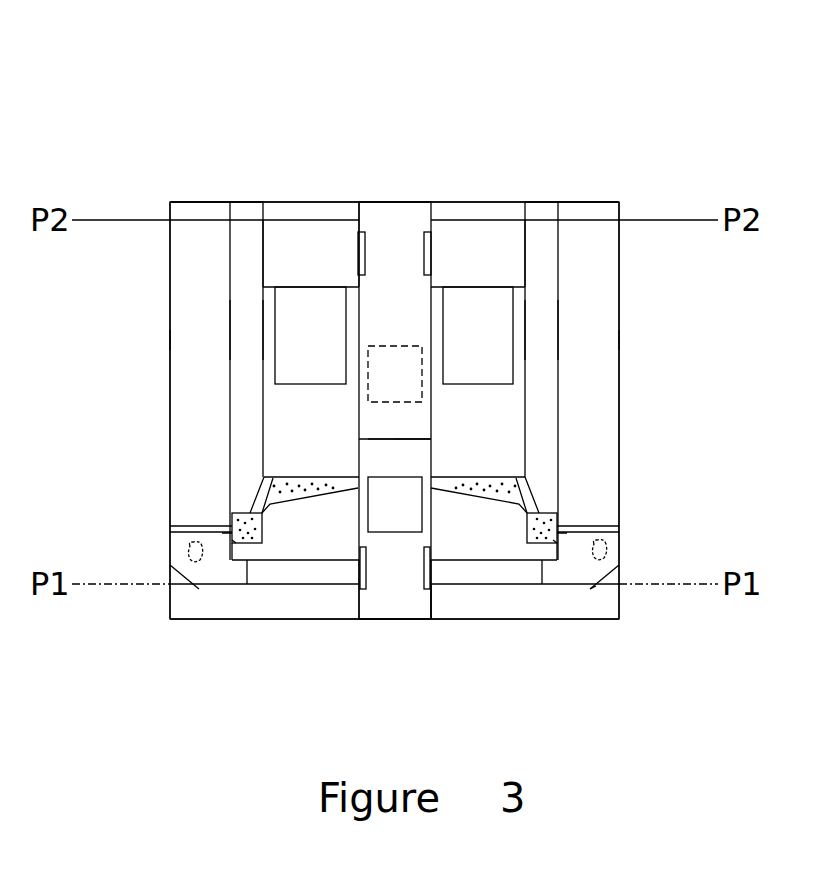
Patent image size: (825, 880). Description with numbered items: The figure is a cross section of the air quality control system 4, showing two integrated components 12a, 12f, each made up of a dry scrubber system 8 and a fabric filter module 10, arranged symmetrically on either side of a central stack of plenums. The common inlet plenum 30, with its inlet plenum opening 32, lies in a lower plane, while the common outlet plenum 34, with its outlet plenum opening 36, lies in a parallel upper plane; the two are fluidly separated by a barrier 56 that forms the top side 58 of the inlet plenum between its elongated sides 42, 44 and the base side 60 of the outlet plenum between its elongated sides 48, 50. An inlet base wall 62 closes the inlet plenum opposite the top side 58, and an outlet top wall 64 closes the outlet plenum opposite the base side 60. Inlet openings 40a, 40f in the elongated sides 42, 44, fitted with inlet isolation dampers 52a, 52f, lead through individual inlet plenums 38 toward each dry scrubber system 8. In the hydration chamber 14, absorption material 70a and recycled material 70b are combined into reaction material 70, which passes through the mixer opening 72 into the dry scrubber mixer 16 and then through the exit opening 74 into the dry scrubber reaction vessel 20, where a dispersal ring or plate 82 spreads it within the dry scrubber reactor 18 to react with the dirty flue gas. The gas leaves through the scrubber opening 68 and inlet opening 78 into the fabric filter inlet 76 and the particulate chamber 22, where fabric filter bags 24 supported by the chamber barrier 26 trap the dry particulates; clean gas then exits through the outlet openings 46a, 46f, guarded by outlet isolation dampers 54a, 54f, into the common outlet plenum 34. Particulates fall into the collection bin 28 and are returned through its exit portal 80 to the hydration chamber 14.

The air quality control system 4 is at (713, 80).
The dry scrubber system 8 is at (170, 342).
The fabric filter module 10 is at (262, 386).
The integrated component 12a is at (273, 258).
The integrated component 12f is at (516, 258).
The hydration chamber 14 is at (250, 512).
The dry scrubber mixer 16 is at (183, 563).
The dry scrubber reactor 18 is at (178, 268).
The dry scrubber reaction vessel 20 is at (168, 240).
The particulate chamber 22 is at (286, 403).
The fabric filter bags 24 is at (370, 385).
The chamber barrier 26 is at (243, 222).
The collection bin 28 is at (264, 477).
The common inlet plenum 30 is at (388, 597).
The inlet plenum opening 32 is at (368, 500).
The common outlet plenum 34 is at (383, 235).
The outlet plenum opening 36 is at (203, 262).
The individual inlet plenum 38 is at (312, 573).
The inlet opening 40a is at (359, 575).
The inlet opening 40f is at (432, 568).
The elongated side 42 is at (359, 588).
The elongated side 44 is at (432, 585).
The outlet opening 46a is at (302, 298).
The outlet opening 46f is at (490, 298).
The elongated side 48 is at (357, 203).
The elongated side 50 is at (433, 203).
The inlet isolation damper 52a is at (361, 568).
The inlet isolation damper 52f is at (430, 575).
The outlet isolation damper 54a is at (358, 267).
The outlet isolation damper 54f is at (431, 267).
The barrier 56 is at (395, 439).
The top side 58 is at (422, 439).
The base side 60 is at (602, 262).
The inlet base wall 62 is at (400, 620).
The outlet top wall 64 is at (402, 202).
The scrubber opening 68 is at (223, 333).
The reaction material 70 is at (600, 585).
The absorption material 70a is at (590, 555).
The recycled material 70b is at (600, 543).
The mixer opening 72 is at (232, 542).
The exit opening 74 is at (222, 533).
The fabric filter inlet 76 is at (238, 327).
The inlet opening 78 is at (262, 324).
The exit portal 80 is at (234, 522).
The dispersal ring or plate 82 is at (170, 530).